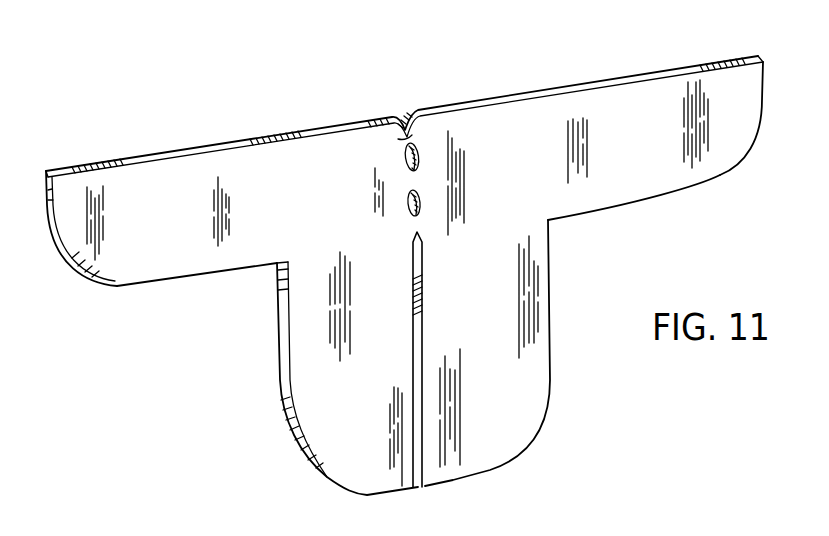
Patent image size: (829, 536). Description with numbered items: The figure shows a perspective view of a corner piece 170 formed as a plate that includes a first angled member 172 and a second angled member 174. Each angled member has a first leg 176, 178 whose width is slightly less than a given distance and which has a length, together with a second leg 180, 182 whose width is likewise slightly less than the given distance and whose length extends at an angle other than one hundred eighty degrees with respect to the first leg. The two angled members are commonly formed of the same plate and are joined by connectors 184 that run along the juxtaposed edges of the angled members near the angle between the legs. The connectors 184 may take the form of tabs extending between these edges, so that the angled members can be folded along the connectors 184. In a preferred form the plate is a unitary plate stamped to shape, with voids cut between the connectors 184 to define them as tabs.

The corner piece 170 is at (543, 75).
The first angled member 172 is at (201, 175).
The second angled member 174 is at (583, 190).
The first leg 176 is at (327, 458).
The first leg 178 is at (510, 418).
The second leg 180 is at (128, 258).
The second leg 182 is at (725, 152).
The connectors 184 is at (413, 177).